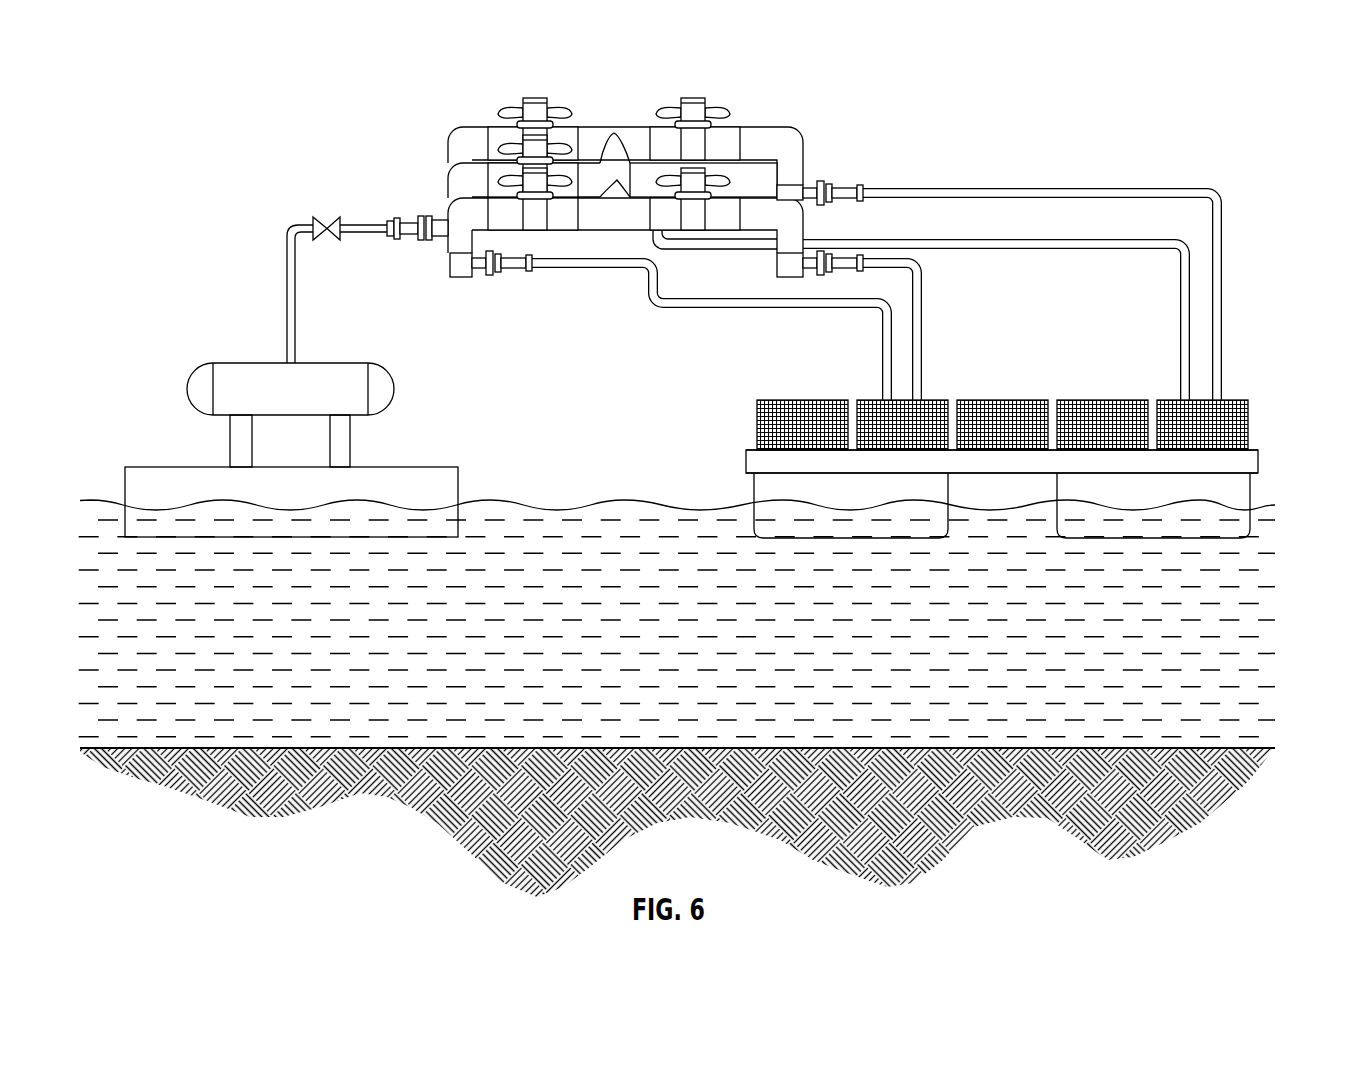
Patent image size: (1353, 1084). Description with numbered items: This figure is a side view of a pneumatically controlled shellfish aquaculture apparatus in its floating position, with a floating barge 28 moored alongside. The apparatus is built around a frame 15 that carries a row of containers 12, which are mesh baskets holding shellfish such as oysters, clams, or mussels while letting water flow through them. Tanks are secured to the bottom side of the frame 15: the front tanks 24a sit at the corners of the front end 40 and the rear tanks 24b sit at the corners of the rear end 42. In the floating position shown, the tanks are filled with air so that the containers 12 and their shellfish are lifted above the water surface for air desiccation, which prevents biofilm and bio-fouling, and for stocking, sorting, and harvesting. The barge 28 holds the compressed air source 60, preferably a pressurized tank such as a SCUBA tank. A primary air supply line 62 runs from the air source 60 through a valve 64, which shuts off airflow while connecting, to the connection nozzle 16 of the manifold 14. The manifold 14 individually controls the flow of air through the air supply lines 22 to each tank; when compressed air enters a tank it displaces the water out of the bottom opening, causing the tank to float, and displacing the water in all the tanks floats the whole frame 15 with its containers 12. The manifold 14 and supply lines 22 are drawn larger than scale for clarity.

The container 12 is at (1240, 430).
The manifold 14 is at (797, 238).
The frame 15 is at (785, 455).
The connection nozzle 16 is at (411, 220).
The air supply line 22 is at (890, 317).
The front tank 24a is at (1250, 497).
The rear tank 24b is at (755, 497).
The floating barge 28 is at (150, 477).
The front end 40 is at (1258, 465).
The rear end 42 is at (746, 464).
The compressed air source 60 is at (385, 390).
The primary air supply line 62 is at (282, 273).
The valve 64 is at (333, 218).